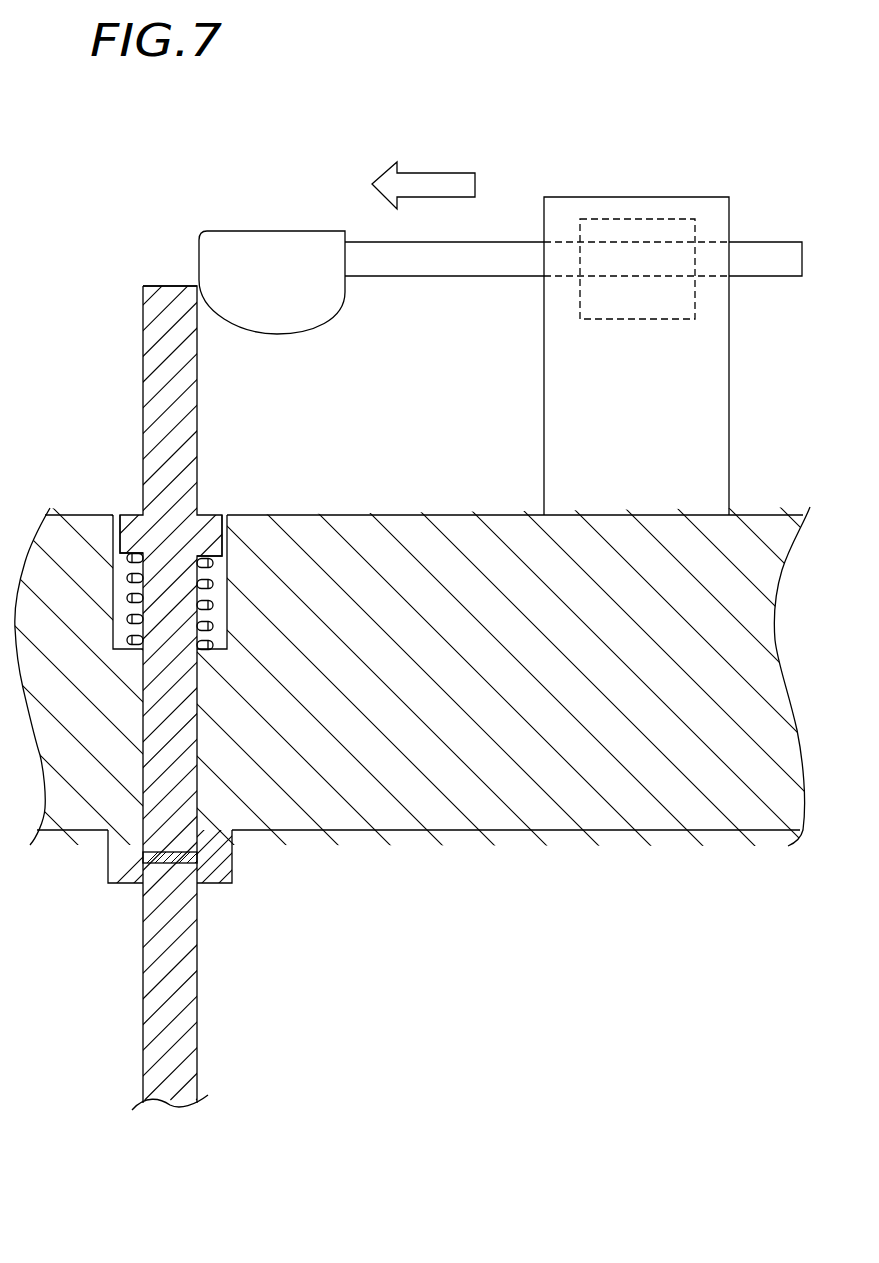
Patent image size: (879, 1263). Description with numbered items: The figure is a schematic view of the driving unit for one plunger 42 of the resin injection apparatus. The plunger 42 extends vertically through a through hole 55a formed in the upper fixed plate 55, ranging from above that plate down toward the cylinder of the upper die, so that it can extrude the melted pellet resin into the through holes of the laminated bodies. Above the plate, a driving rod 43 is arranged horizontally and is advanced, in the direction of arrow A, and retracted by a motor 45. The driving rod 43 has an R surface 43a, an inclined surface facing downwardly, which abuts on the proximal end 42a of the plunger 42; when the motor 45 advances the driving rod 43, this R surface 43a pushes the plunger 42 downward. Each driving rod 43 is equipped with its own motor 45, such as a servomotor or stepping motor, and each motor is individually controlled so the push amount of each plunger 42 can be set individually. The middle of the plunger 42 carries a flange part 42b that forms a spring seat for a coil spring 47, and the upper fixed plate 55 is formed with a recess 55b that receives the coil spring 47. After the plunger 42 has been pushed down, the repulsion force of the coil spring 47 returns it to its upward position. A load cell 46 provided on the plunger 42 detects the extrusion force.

The plunger 42 is at (143, 403).
The proximal end of plunger 42a is at (173, 284).
The flange part 42b is at (208, 535).
The driving rod 43 is at (502, 242).
The R surface 43a is at (231, 322).
The motor 45 is at (643, 218).
The load cell 46 is at (180, 865).
The coil spring 47 is at (121, 580).
The upper fixed plate 55 is at (748, 650).
The through hole 55a is at (148, 733).
The recess 55b is at (228, 592).
The direction of arrow A is at (437, 173).